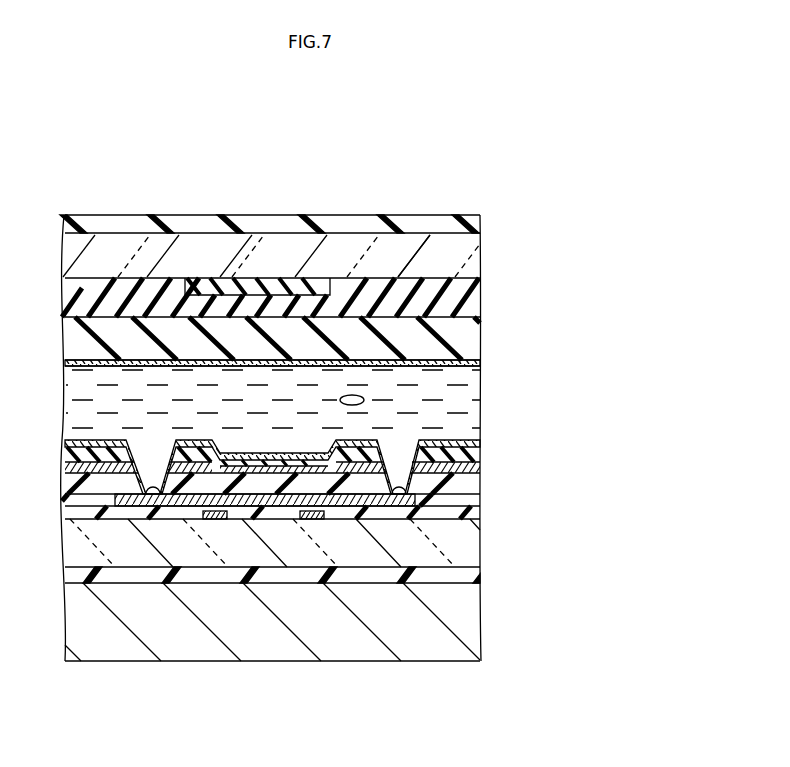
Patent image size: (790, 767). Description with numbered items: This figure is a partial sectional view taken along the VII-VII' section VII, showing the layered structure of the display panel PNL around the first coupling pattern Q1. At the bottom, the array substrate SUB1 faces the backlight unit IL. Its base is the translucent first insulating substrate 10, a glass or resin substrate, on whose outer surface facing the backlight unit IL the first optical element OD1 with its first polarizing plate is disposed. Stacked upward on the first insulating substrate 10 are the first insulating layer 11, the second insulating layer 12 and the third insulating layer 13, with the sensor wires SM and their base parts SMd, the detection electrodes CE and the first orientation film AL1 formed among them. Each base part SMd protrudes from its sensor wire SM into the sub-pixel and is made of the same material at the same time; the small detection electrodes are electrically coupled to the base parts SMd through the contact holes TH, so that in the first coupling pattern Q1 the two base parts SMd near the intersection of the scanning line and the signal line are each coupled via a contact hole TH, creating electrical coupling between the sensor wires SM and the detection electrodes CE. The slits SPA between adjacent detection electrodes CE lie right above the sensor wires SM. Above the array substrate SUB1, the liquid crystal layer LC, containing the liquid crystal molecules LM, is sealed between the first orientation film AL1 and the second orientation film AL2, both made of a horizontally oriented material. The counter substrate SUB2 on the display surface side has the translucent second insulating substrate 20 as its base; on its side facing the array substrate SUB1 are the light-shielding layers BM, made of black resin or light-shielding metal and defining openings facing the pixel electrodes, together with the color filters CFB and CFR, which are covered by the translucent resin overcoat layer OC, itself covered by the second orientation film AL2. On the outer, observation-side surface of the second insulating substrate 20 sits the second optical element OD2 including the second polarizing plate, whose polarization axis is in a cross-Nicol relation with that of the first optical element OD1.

The first coupling pattern Q1 is at (466, 127).
The display panel PNL is at (478, 206).
The second optical element OD2 is at (481, 232).
The second insulating substrate 20 is at (473, 257).
The color filter CFB is at (97, 270).
The color filter CFR is at (433, 293).
The light-shielding layer BM is at (293, 279).
The slit SPA is at (263, 436).
The counter substrate SUB2 is at (493, 296).
The overcoat layer OC is at (466, 331).
The second orientation film AL2 is at (484, 363).
The liquid crystal layer LC is at (470, 392).
The liquid crystal molecule LM is at (352, 394).
The first orientation film AL1 is at (483, 440).
The contact hole TH is at (152, 426).
The third insulating layer 13 is at (477, 453).
The detection electrode CE is at (483, 465).
The array substrate SUB1 is at (497, 477).
The second insulating layer 12 is at (468, 498).
The first insulating layer 11 is at (466, 522).
The first insulating substrate 10 is at (462, 547).
The sensor wire SM is at (272, 508).
The base part SMd is at (175, 492).
The first optical element OD1 is at (462, 575).
The backlight unit IL is at (342, 650).
The VII-VII' section VII is at (273, 689).